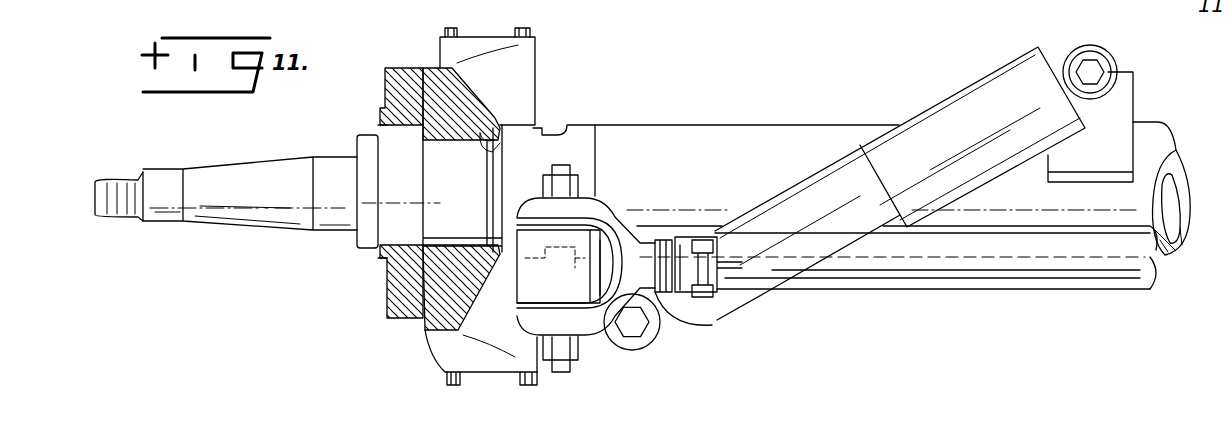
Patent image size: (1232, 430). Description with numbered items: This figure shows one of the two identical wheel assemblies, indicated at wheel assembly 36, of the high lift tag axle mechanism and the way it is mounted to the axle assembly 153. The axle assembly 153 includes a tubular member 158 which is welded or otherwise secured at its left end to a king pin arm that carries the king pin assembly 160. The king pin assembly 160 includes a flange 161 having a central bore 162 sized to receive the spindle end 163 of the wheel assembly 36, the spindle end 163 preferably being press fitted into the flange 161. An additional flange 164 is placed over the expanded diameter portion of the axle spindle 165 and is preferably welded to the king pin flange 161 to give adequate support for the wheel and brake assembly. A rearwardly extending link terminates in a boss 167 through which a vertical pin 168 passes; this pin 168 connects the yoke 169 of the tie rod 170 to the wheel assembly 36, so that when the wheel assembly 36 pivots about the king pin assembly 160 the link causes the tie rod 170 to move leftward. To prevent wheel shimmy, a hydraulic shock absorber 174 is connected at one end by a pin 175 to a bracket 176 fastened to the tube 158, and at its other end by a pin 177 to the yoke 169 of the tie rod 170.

The wheel assembly 36 is at (226, 204).
The axle assembly 153 is at (822, 88).
The tubular member 158 is at (1165, 157).
The king pin assembly 160 is at (538, 64).
The flange 161 is at (411, 175).
The central bore 162 is at (491, 139).
The spindle end 163 is at (440, 200).
The additional flange 164 is at (393, 92).
The axle spindle 165 is at (227, 172).
The boss 167 is at (527, 278).
The vertical pin 168 is at (568, 364).
The yoke 169 is at (598, 207).
The tie rod 170 is at (1038, 290).
The hydraulic shock absorber 174 is at (963, 92).
The pin 175 is at (1092, 64).
The bracket 176 is at (1122, 113).
The pin 177 is at (637, 328).